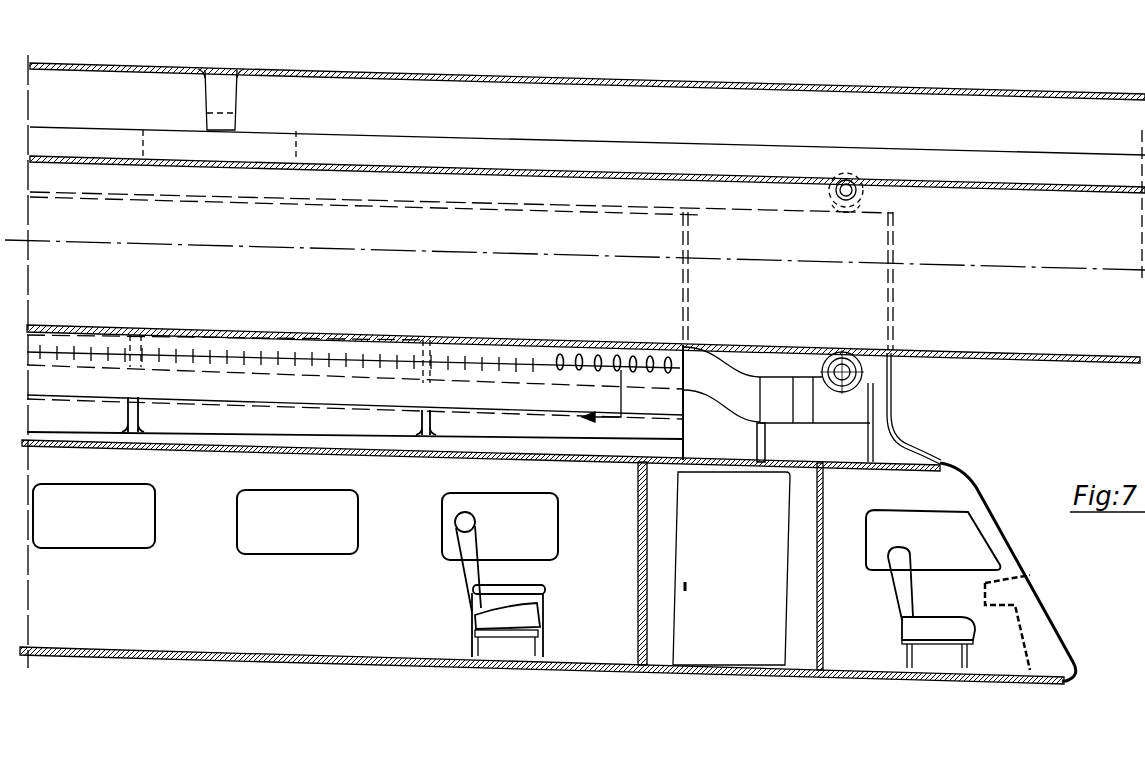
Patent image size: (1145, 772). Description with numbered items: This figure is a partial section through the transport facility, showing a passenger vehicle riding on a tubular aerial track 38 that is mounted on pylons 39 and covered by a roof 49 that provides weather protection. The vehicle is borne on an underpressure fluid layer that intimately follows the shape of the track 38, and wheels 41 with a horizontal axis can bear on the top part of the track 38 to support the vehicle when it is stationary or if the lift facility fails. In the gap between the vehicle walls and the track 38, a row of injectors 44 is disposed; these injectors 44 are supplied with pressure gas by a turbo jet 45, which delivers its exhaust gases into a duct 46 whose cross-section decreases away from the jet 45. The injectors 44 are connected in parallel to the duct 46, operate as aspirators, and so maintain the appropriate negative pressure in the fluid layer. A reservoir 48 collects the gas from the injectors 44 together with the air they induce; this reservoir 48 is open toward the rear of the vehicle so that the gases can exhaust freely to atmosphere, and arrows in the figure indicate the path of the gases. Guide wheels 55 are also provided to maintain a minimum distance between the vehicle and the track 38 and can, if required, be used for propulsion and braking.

The track 38 is at (1063, 190).
The pylons 39 is at (216, 76).
The wheels 41 is at (866, 198).
The injectors 44 is at (598, 354).
The turbo jet 45 is at (827, 415).
The duct 46 is at (720, 388).
The reservoir 48 is at (550, 428).
The roof 49 is at (466, 80).
The guide wheels 55 is at (866, 350).